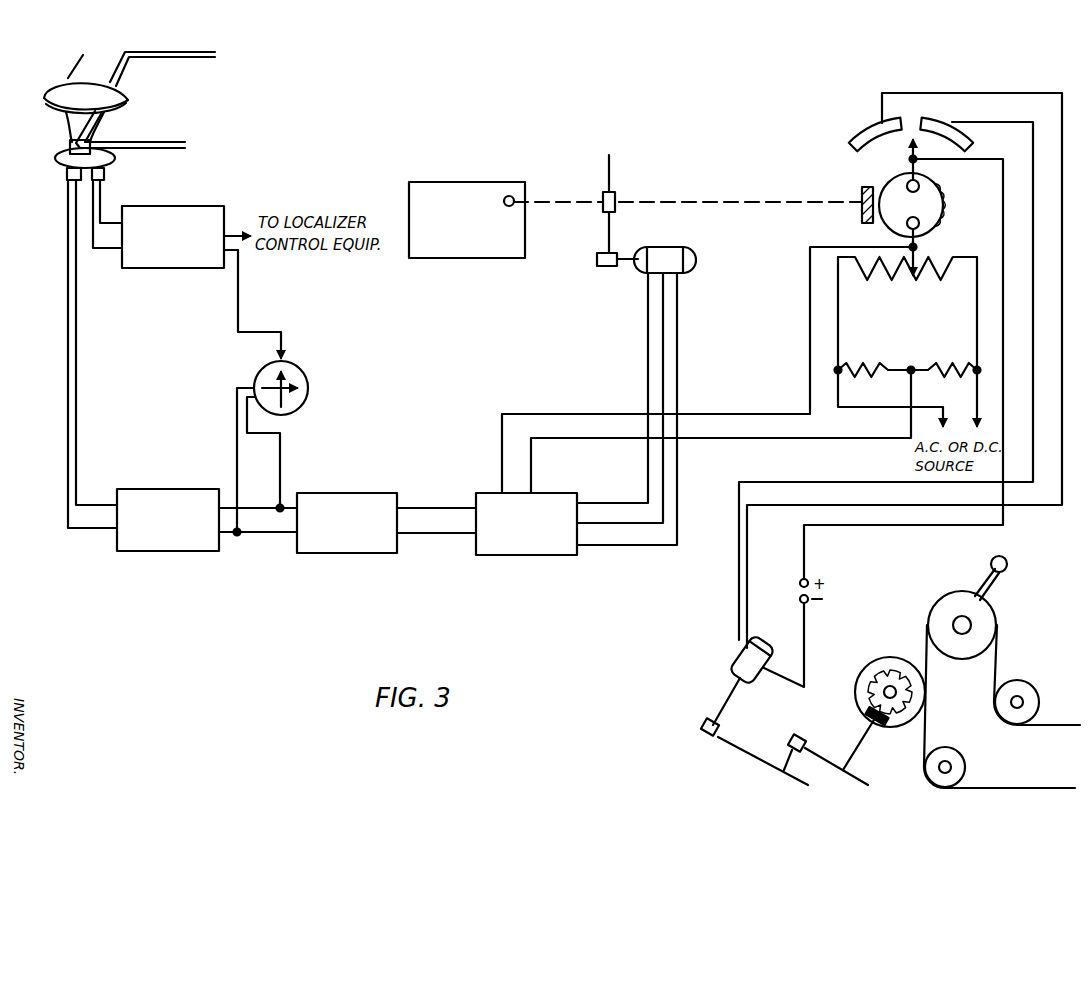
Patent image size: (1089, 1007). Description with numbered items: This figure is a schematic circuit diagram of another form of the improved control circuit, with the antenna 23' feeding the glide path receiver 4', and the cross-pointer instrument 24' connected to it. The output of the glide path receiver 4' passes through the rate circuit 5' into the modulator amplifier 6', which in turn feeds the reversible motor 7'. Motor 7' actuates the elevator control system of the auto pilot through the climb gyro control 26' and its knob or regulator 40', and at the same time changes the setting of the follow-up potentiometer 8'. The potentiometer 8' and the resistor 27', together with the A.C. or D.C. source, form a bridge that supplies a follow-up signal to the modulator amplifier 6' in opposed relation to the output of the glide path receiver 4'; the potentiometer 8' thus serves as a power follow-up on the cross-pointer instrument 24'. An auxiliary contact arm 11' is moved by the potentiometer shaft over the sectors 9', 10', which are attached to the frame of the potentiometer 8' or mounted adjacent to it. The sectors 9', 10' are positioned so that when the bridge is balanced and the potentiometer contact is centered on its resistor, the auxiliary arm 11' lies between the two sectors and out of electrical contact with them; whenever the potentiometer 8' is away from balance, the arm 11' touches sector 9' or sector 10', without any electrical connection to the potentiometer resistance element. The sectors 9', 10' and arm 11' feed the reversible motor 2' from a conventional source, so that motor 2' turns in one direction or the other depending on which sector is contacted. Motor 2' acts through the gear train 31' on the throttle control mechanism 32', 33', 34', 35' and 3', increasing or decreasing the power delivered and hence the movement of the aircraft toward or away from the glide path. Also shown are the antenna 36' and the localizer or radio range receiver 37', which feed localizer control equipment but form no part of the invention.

The antenna 23' is at (108, 290).
The antenna 36' is at (130, 125).
The localizer or radio range receiver 37' is at (186, 218).
The cross-pointer instrument 24' is at (286, 437).
The glide path receiver 4' is at (207, 502).
The rate circuit 5' is at (386, 506).
The modulator amplifier 6' is at (528, 508).
The control 26' is at (467, 201).
The control knob 40' is at (535, 175).
The reversible motor 7' is at (677, 266).
The sector 9' is at (872, 122).
The sector 10' is at (946, 122).
The auxiliary contact arm 11' is at (900, 207).
The follow-up potentiometer 8' is at (907, 313).
The resistor 27' is at (908, 377).
The reversible motor 2' is at (739, 674).
The gear train 31' is at (789, 750).
The throttle control mechanism 32' is at (890, 675).
The throttle control mechanism 3' is at (980, 607).
The throttle control mechanism 33' is at (1002, 706).
The throttle control mechanism 34' is at (959, 753).
The throttle control mechanism 35' is at (1032, 684).